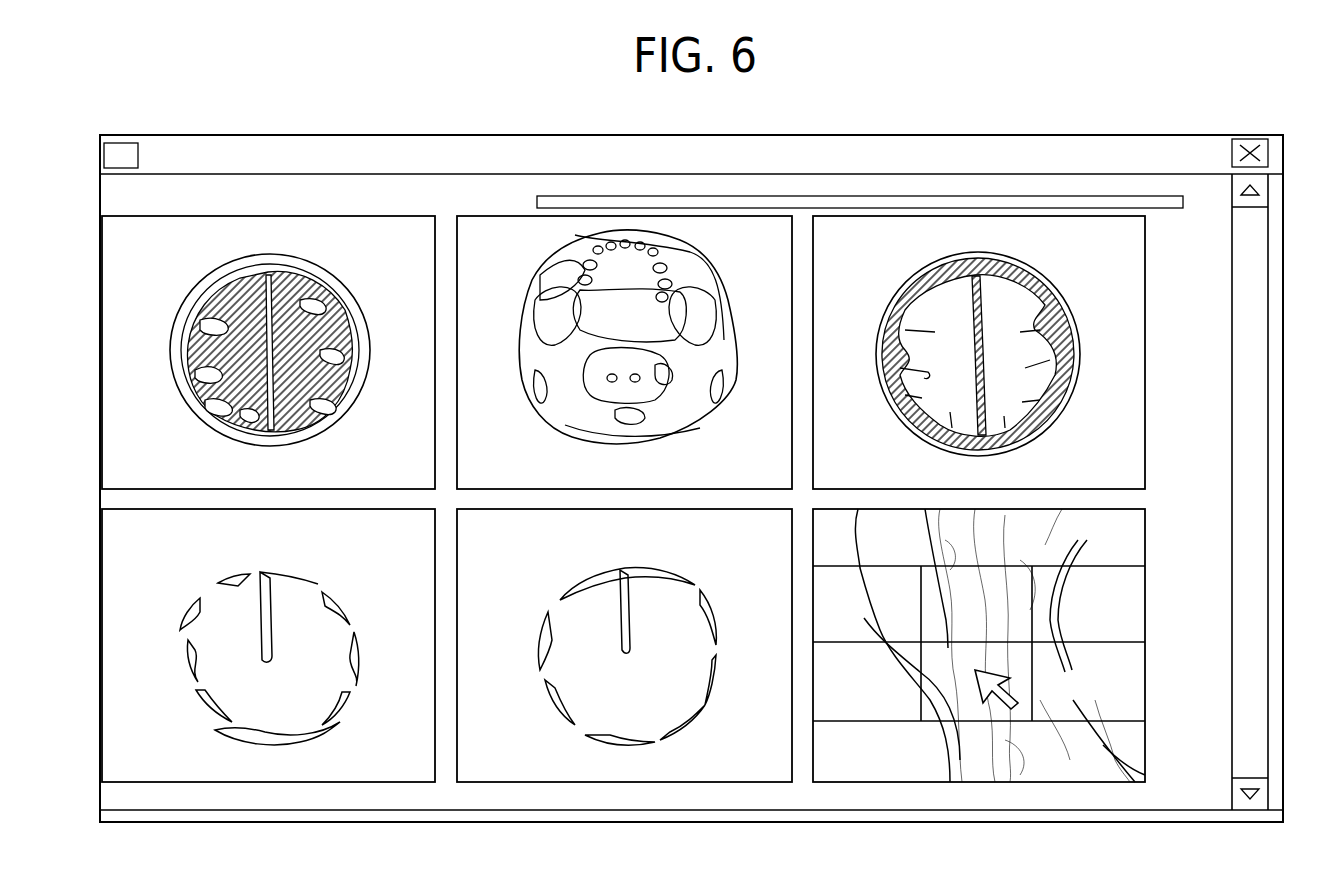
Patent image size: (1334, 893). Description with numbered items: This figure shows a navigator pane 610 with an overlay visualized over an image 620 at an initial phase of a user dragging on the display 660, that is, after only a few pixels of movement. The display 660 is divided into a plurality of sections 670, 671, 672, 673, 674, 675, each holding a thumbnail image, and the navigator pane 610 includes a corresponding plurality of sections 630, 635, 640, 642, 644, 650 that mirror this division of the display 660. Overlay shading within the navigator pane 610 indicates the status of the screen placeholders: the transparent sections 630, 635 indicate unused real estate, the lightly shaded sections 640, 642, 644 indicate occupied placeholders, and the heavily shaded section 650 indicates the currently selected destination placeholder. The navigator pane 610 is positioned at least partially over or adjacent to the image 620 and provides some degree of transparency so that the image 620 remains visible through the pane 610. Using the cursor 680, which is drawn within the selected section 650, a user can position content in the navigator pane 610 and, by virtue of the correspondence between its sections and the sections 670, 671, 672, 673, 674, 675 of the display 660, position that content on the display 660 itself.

The display 660 is at (492, 135).
The display section 670 is at (360, 257).
The display section 671 is at (692, 250).
The display section 672 is at (923, 242).
The display section 673 is at (302, 782).
The display section 674 is at (692, 782).
The display section 675 is at (1069, 687).
The image 620 is at (1097, 552).
The navigator pane 610 is at (1147, 607).
The lightly shaded section 640 is at (866, 609).
The lightly shaded section 642 is at (994, 609).
The transparent section 635 is at (1112, 609).
The transparent section 630 is at (869, 702).
The heavily shaded section 650 is at (966, 679).
The lightly shaded section 644 is at (1101, 696).
The cursor 680 is at (1007, 702).